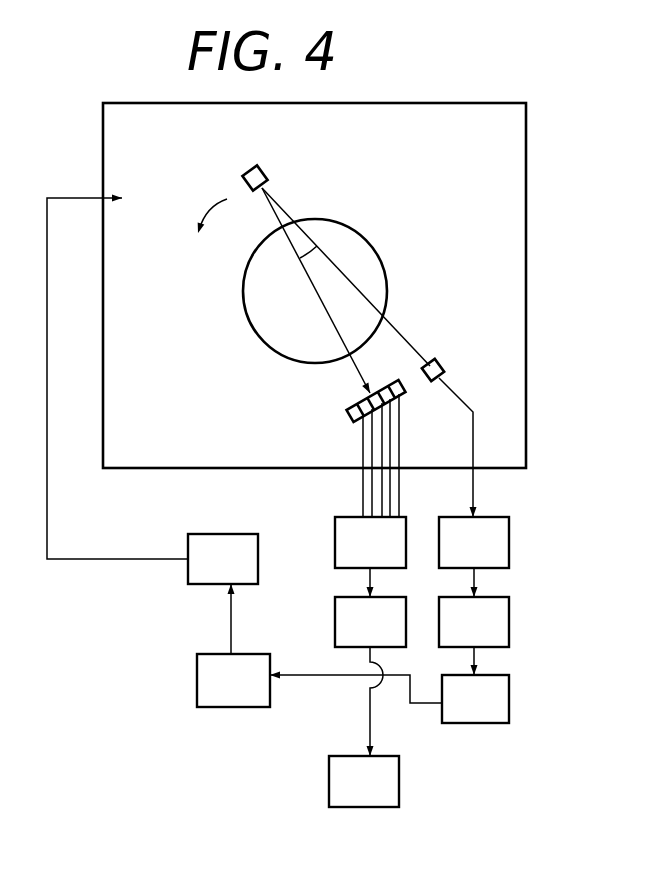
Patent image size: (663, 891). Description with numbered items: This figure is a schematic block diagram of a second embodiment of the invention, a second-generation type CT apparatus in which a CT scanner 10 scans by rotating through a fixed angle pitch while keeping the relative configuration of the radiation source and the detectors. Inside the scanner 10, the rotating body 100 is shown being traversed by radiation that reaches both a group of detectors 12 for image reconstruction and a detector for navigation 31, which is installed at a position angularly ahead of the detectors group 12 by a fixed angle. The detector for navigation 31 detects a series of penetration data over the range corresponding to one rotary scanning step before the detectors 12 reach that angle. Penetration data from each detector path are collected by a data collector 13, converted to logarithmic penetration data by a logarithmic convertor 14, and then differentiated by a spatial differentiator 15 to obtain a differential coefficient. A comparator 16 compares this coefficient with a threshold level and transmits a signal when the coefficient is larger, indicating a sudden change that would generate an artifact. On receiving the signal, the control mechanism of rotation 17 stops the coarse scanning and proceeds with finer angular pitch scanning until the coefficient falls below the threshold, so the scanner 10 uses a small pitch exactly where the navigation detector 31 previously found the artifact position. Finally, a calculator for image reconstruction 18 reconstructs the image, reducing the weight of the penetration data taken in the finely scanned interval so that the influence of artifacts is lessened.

The CT scanner 10 is at (526, 138).
The rotating body (disc) 100 is at (383, 267).
The detector for navigation 31 is at (440, 366).
The detectors group 12 is at (354, 420).
The data collector 13 is at (335, 540).
The logarithmic convertor 14 is at (335, 616).
The spatial differentiator 15 is at (509, 693).
The comparator 16 is at (197, 680).
The control mechanism of rotation 17 is at (188, 556).
The calculator for image reconstruction 18 is at (399, 777).